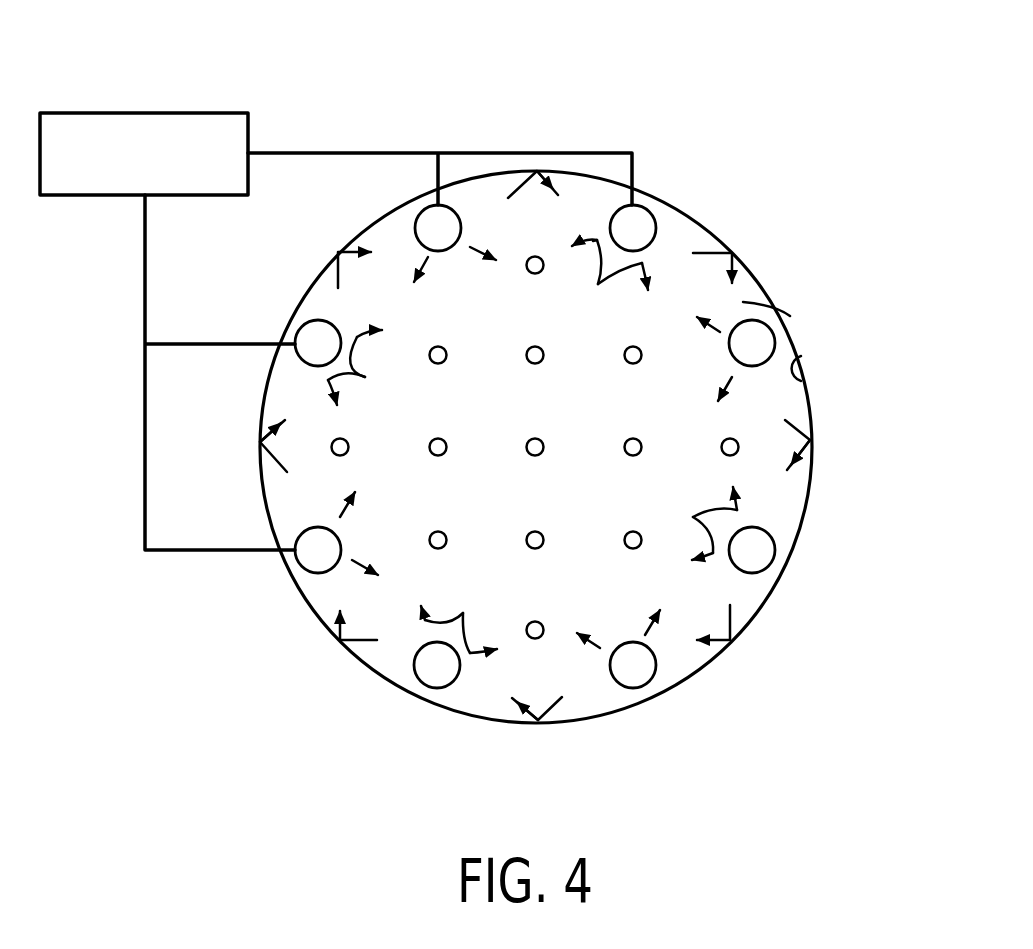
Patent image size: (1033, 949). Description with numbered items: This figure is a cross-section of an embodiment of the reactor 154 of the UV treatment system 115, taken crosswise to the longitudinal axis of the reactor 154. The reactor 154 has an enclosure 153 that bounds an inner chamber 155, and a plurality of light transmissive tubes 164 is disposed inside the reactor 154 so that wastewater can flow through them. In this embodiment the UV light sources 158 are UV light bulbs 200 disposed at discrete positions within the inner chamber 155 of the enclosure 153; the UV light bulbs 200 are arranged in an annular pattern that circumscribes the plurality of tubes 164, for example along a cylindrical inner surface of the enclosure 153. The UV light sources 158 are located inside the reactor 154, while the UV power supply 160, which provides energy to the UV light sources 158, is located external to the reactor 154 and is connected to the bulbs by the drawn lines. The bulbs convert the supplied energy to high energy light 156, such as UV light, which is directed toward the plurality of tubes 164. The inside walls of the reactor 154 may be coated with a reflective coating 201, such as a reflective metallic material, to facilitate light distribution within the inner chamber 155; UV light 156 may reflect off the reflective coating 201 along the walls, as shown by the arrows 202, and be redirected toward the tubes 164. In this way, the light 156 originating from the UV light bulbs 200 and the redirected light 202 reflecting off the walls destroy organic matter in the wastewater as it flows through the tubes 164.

The UV treatment system 115 is at (620, 52).
The enclosure 153 is at (760, 282).
The reactor 154 is at (700, 210).
The inner chamber 155 is at (790, 316).
The high energy light 156 is at (365, 377).
The UV light sources 158 is at (397, 661).
The UV power supply 160 is at (143, 113).
The light transmissive tubes 164 is at (529, 358).
The UV light bulbs 200 is at (297, 321).
The reflective coating 201 is at (805, 378).
The arrows indicating redirected light 202 is at (532, 175).